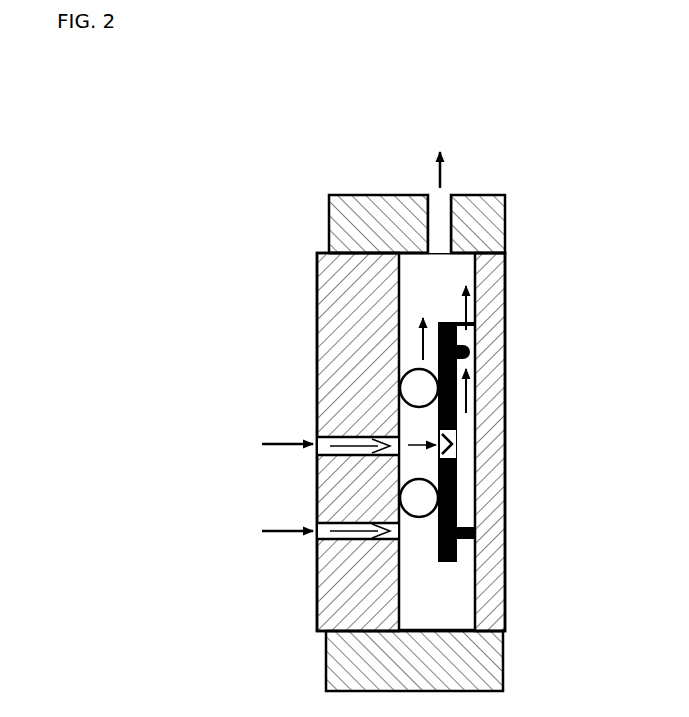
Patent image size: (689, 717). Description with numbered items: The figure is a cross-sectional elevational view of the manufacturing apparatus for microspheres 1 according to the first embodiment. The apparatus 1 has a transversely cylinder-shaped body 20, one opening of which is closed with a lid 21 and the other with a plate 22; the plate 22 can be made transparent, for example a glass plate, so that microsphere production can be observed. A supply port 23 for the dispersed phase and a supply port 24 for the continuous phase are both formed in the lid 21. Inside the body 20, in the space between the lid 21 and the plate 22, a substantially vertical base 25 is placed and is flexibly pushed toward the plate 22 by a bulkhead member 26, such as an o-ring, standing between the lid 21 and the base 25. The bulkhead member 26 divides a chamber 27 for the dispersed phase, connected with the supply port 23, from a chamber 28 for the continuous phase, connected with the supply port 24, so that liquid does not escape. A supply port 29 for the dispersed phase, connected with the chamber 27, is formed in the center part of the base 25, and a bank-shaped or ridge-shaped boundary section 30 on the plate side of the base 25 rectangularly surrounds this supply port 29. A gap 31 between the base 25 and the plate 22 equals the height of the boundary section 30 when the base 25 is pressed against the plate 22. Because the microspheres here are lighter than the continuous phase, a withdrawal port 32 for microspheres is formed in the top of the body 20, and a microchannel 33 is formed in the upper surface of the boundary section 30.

The manufacturing apparatus for microspheres 1 is at (305, 183).
The body 20 is at (377, 218).
The lid 21 is at (335, 302).
The plate 22 is at (485, 418).
The supply port for dispersed phase 23 is at (313, 455).
The supply port for continuous phase 24 is at (313, 540).
The base 25 is at (470, 386).
The bulkhead member 26 is at (414, 518).
The chamber for dispersed phase 27 is at (410, 428).
The chamber for continuous phase 28 is at (451, 625).
The supply port for dispersed phase in base 29 is at (455, 453).
The boundary section 30 is at (472, 538).
The gap 31 is at (462, 493).
The withdrawal port for microspheres 32 is at (447, 222).
The microchannel 33 is at (470, 353).